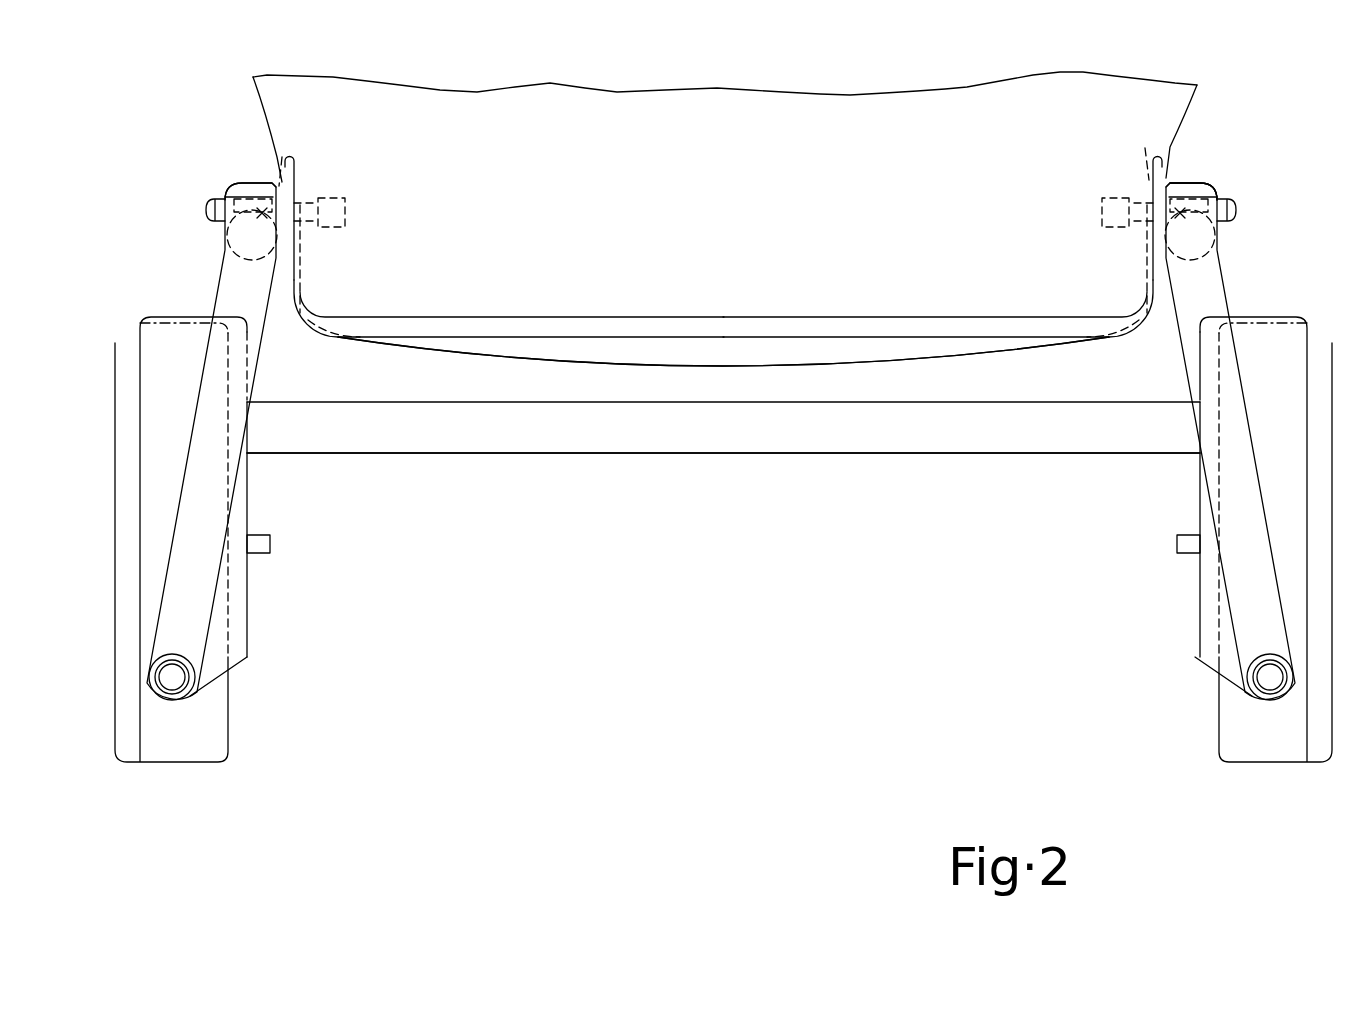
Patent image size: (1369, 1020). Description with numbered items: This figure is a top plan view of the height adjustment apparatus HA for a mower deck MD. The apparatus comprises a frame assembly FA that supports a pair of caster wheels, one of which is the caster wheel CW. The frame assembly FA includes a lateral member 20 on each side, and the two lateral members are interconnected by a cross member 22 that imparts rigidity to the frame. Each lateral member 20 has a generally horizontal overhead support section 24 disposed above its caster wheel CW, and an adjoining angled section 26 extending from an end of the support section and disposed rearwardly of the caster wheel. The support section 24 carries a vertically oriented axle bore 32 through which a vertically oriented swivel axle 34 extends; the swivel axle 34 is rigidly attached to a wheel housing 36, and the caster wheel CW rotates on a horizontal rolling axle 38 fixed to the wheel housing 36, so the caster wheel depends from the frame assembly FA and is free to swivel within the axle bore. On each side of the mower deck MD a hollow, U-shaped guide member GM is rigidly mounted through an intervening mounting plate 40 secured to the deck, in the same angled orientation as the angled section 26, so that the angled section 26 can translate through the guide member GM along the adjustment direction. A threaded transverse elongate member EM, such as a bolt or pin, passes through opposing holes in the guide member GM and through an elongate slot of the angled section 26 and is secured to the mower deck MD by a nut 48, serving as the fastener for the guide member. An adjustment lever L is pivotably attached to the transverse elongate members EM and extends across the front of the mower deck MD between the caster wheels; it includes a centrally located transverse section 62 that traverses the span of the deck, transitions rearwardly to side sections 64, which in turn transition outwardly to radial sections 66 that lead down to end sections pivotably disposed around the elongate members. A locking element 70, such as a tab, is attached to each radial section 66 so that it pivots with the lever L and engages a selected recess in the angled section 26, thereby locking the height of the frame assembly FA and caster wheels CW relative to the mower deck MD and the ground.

The lateral member 20 is at (1251, 441).
The cross member 22 is at (811, 453).
The overhead support section 24 is at (1139, 494).
The angled section 26 is at (282, 157).
The axle bore 32 is at (1184, 718).
The swivel axle 34 is at (1249, 758).
The wheel housing 36 is at (1145, 677).
The rolling axle 38 is at (1132, 565).
The mounting plate 40 is at (1092, 222).
The nut 48 is at (1077, 206).
The transverse section 62 is at (697, 337).
The side section 64 is at (938, 308).
The radial section 66 is at (1248, 176).
The locking element 70 is at (1111, 243).
The mower deck MD is at (748, 207).
The adjustment lever L is at (888, 290).
The frame assembly FA is at (557, 503).
The height adjustment apparatus HA is at (1297, 122).
The guide member GM is at (1222, 157).
The transverse elongate member EM is at (1281, 205).
The caster wheel CW is at (1226, 576).